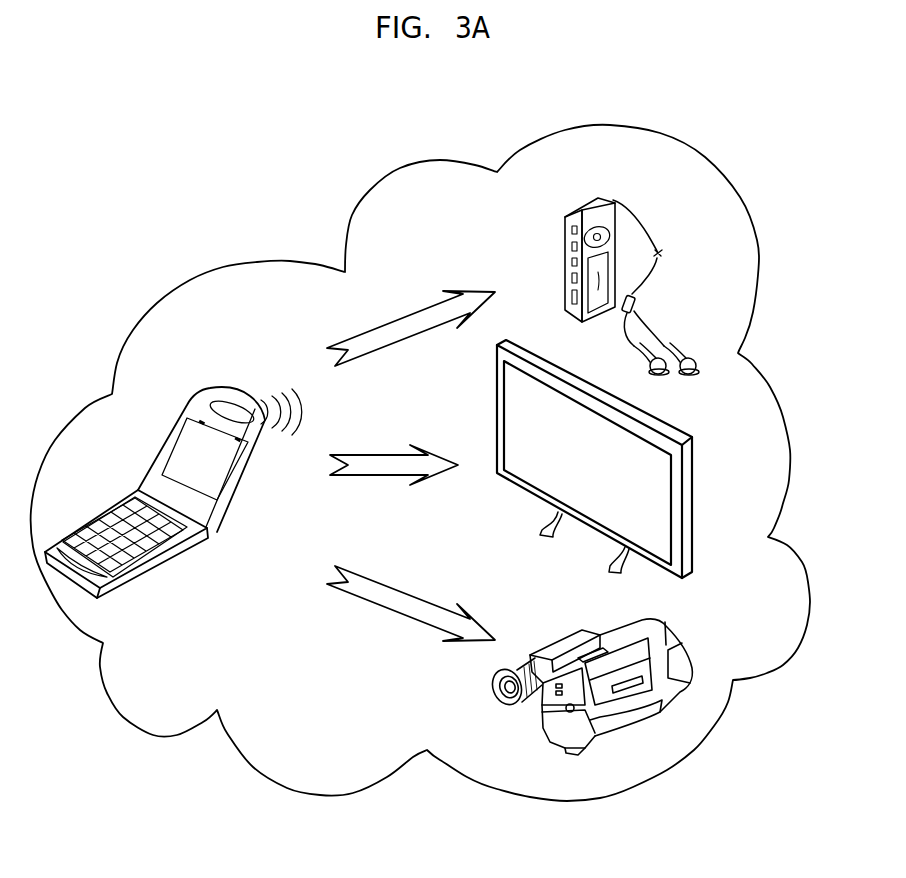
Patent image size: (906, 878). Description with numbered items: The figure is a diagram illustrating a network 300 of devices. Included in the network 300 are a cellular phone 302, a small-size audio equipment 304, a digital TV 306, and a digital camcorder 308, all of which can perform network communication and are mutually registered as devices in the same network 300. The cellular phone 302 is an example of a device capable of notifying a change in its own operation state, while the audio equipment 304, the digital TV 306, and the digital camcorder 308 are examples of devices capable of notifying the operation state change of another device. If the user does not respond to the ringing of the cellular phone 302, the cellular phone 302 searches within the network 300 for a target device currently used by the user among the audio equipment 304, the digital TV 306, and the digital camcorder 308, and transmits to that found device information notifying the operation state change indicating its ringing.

The network 300 is at (697, 155).
The cellular phone 302 is at (217, 390).
The small-size audio equipment 304 is at (578, 210).
The digital TV 306 is at (689, 441).
The digital camcorder 308 is at (689, 640).